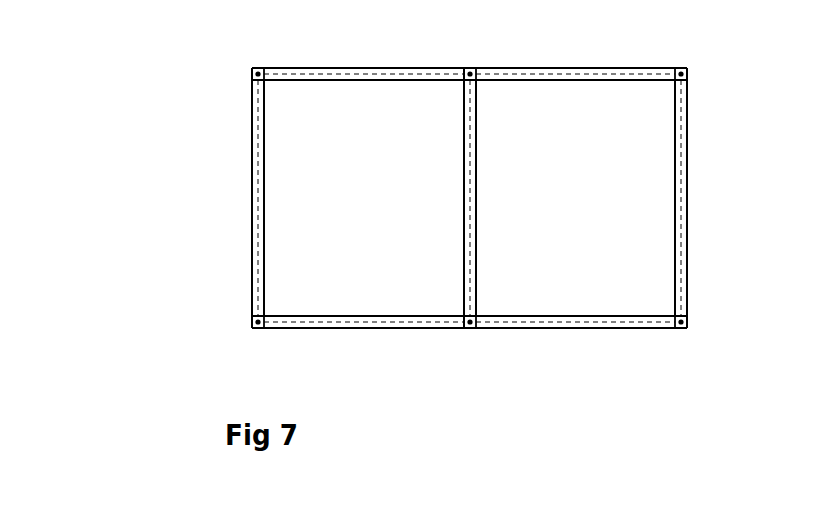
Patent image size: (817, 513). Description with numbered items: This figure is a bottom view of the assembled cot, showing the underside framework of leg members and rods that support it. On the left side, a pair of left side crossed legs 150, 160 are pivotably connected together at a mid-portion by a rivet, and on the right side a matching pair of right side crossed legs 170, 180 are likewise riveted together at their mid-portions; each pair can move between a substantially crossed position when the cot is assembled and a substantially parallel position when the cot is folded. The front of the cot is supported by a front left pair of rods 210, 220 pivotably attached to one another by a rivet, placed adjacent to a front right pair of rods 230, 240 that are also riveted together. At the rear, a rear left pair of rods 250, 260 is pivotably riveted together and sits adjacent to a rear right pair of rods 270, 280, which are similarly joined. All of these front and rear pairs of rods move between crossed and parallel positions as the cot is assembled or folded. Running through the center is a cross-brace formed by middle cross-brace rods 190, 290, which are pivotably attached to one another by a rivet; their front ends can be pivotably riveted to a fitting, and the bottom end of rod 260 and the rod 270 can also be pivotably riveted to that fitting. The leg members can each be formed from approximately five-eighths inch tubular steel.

The left side crossed leg 150 is at (262, 213).
The left side crossed leg 160 is at (252, 161).
The right side crossed leg 170 is at (675, 153).
The right side crossed leg 180 is at (687, 222).
The middle cross-brace rod 190 is at (464, 183).
The front left rod 210 is at (332, 80).
The front left rod 220 is at (340, 68).
The front right rod 230 is at (587, 80).
The front right rod 240 is at (515, 68).
The rear left rod 250 is at (592, 328).
The rear left rod 260 is at (572, 316).
The rear right rod 270 is at (338, 328).
The rear right rod 280 is at (360, 316).
The middle cross-brace rod 290 is at (477, 230).